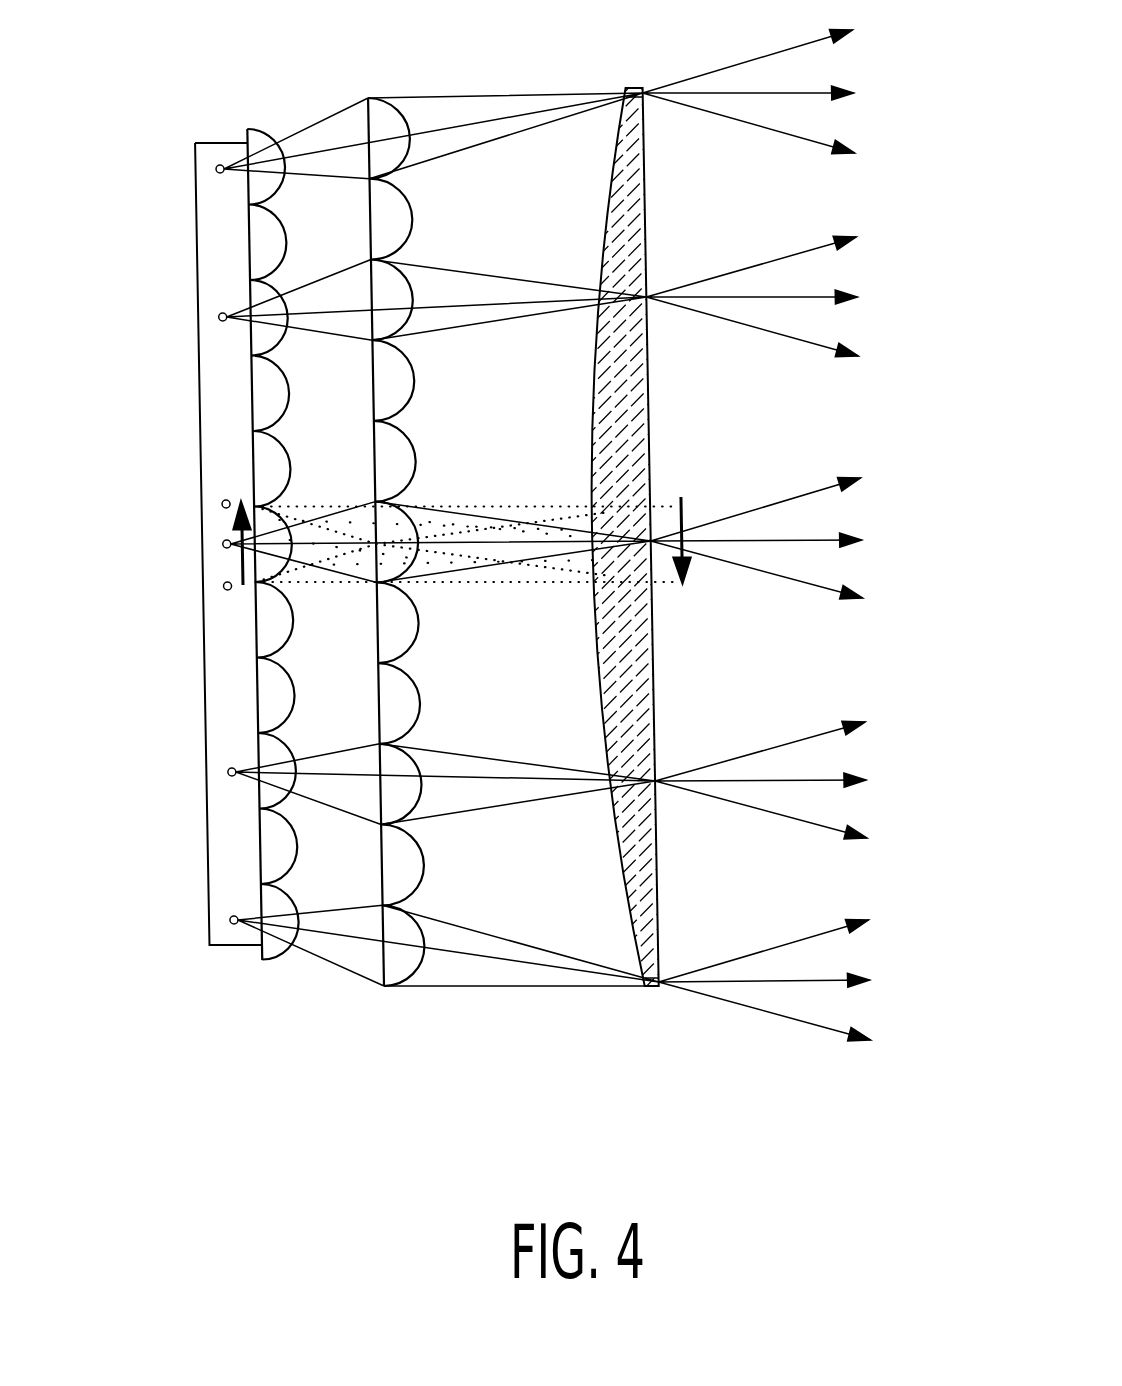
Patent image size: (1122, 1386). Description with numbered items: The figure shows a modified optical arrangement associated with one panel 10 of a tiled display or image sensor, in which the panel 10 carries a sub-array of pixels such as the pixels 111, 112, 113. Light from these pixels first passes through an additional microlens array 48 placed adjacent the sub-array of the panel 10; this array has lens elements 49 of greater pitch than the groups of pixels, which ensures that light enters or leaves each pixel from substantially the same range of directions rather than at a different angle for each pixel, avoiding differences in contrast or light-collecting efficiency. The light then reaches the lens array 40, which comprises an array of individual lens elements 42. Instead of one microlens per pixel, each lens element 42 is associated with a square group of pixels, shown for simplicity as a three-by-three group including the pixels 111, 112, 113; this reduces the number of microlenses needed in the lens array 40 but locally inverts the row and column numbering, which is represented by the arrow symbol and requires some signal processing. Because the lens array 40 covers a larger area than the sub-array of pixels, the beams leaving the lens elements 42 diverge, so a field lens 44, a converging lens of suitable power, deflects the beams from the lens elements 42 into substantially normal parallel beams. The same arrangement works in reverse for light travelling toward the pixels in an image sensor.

The panel 10 is at (192, 757).
The pixel 111 is at (212, 504).
The pixel 112 is at (212, 545).
The pixel 113 is at (213, 587).
The lens array 40 is at (388, 82).
The lens element 42 is at (402, 975).
The field lens 44 is at (631, 88).
The additional microlens array 48 is at (271, 113).
The lens element 49 is at (256, 961).